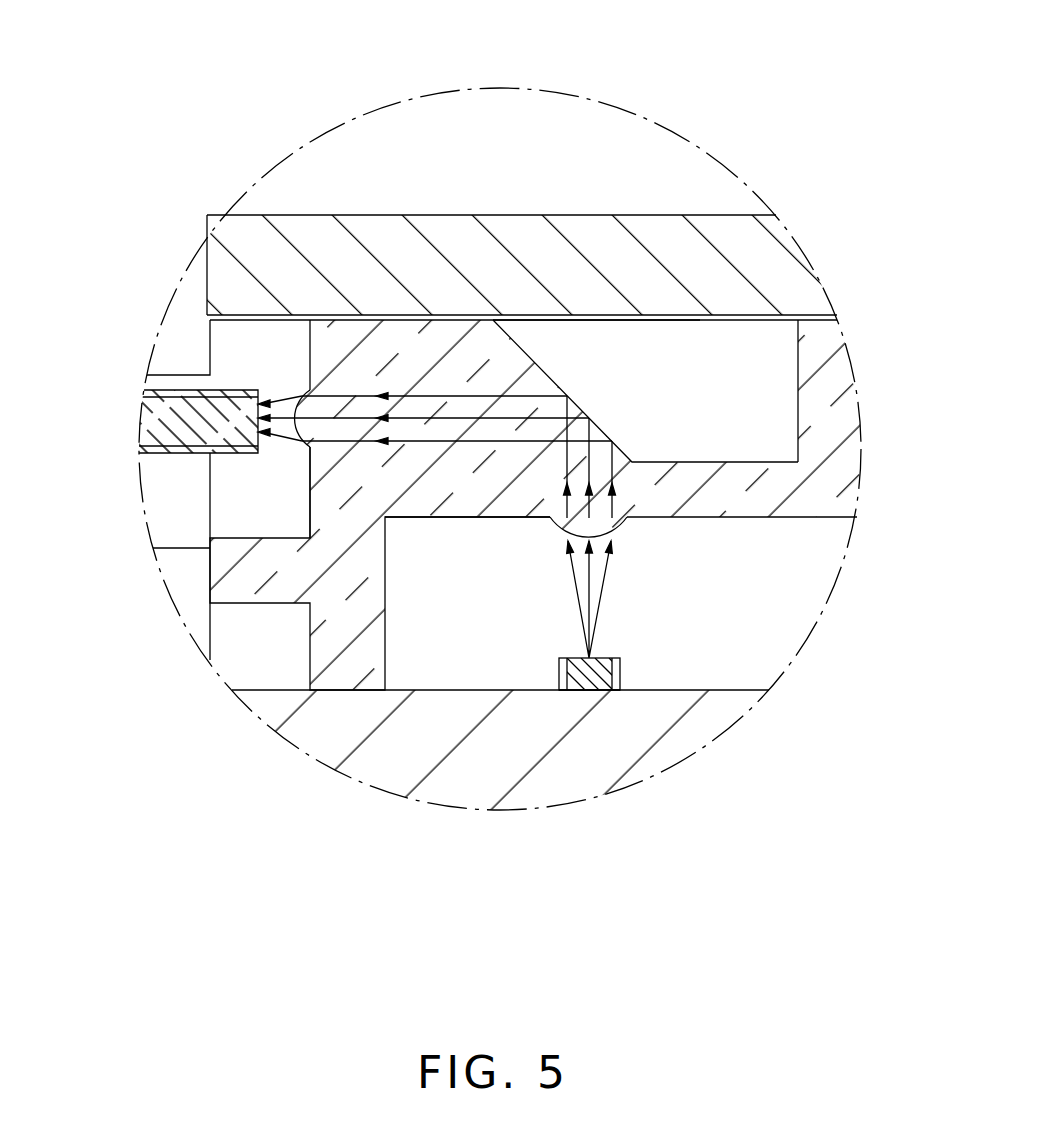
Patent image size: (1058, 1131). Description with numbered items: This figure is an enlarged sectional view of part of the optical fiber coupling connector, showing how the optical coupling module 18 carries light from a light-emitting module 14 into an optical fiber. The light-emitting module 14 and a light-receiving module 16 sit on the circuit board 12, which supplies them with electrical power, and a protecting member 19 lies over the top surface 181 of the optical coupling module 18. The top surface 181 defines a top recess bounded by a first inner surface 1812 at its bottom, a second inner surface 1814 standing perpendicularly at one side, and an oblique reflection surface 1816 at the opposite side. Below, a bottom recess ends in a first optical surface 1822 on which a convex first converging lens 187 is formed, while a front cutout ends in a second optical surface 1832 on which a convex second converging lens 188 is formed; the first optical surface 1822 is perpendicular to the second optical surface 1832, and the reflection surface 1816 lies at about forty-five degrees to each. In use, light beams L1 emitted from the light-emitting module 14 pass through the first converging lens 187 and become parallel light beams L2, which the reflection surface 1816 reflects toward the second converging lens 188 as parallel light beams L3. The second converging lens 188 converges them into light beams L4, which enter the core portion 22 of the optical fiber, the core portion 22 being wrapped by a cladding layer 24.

The circuit board 12 is at (480, 760).
The light-emitting module 14 is at (587, 688).
The light-receiving module 16 is at (562, 677).
The optical coupling module 18 is at (530, 467).
The protecting member 19 is at (530, 248).
The core portion 22 is at (133, 410).
The cladding layer 24 is at (190, 392).
The top surface 181 is at (815, 325).
The first converging lens 187 is at (545, 527).
The second converging lens 188 is at (300, 393).
The first inner surface 1812 is at (725, 462).
The second inner surface 1814 is at (797, 365).
The reflection surface 1816 is at (588, 318).
The first optical surface 1822 is at (748, 518).
The second optical surface 1832 is at (310, 360).
The light beam L1 is at (613, 503).
The parallel light beam L2 is at (601, 593).
The parallel light beam L3 is at (472, 397).
The converged light beam L4 is at (305, 445).